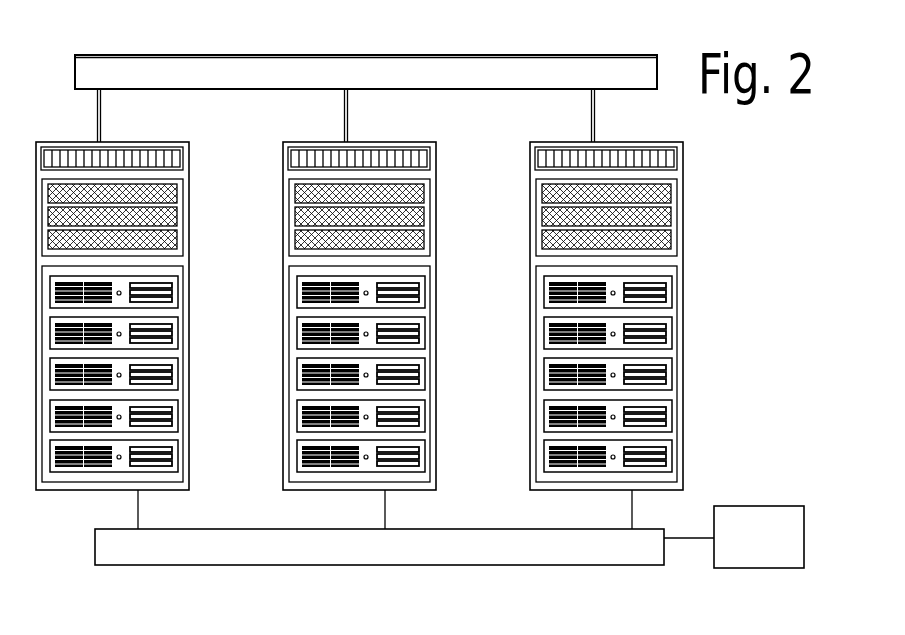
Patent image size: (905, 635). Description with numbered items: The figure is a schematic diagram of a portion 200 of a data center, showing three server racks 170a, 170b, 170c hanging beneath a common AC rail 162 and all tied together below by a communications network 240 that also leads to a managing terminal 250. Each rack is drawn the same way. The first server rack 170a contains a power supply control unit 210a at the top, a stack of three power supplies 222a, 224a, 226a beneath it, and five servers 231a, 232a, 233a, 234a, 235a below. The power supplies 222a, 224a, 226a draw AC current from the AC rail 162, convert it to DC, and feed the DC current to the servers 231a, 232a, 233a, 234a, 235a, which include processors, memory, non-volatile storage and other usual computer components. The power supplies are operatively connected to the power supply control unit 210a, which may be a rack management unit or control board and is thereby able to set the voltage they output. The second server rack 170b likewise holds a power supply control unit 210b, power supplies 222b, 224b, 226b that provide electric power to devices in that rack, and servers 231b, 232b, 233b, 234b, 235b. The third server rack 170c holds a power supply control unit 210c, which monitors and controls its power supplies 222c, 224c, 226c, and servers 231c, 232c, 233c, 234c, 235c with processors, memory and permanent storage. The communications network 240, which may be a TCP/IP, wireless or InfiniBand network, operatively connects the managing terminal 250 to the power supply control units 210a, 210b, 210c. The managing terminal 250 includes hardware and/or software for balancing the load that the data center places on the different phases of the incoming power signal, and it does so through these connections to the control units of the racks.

The AC rail 162 is at (75, 68).
The server rack 170a is at (88, 142).
The server rack 170b is at (335, 142).
The server rack 170c is at (582, 142).
The portion of the data center 200 is at (690, 105).
The power supply control unit 210a is at (183, 160).
The power supply control unit 210b is at (430, 160).
The power supply control unit 210c is at (677, 160).
The power supply 222a is at (177, 193).
The power supply 222b is at (424, 193).
The power supply 222c is at (671, 193).
The power supply 224a is at (177, 216).
The power supply 224b is at (424, 216).
The power supply 224c is at (671, 216).
The power supply 226a is at (177, 239).
The power supply 226b is at (424, 239).
The power supply 226c is at (671, 239).
The server 231a is at (178, 292).
The server 231b is at (425, 292).
The server 231c is at (672, 292).
The server 232a is at (178, 333).
The server 232b is at (425, 333).
The server 232c is at (672, 333).
The server 233a is at (178, 374).
The server 233b is at (425, 374).
The server 233c is at (672, 374).
The server 234a is at (178, 416).
The server 234b is at (425, 416).
The server 234c is at (672, 416).
The server 235a is at (178, 456).
The server 235b is at (425, 456).
The server 235c is at (672, 456).
The communications network 240 is at (95, 551).
The managing terminal 250 is at (760, 506).